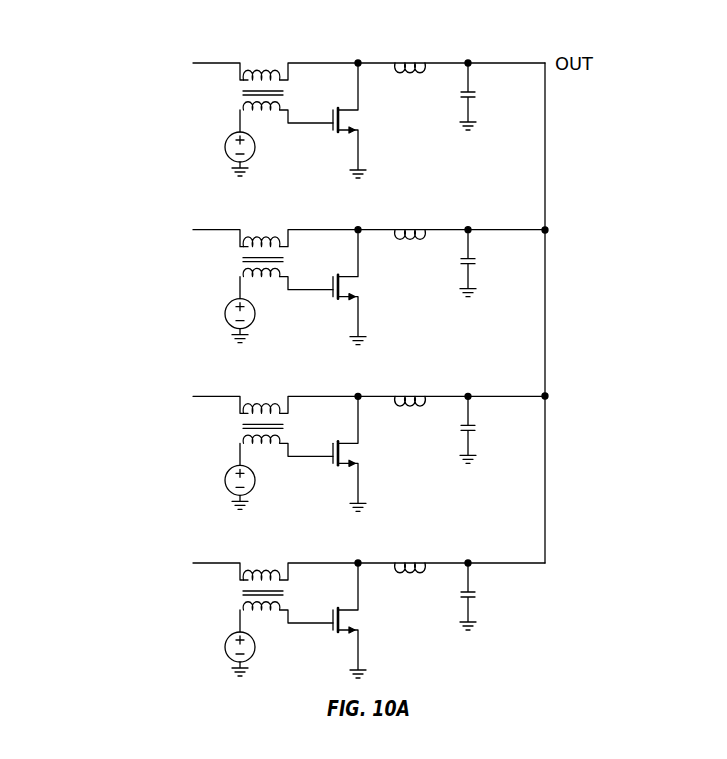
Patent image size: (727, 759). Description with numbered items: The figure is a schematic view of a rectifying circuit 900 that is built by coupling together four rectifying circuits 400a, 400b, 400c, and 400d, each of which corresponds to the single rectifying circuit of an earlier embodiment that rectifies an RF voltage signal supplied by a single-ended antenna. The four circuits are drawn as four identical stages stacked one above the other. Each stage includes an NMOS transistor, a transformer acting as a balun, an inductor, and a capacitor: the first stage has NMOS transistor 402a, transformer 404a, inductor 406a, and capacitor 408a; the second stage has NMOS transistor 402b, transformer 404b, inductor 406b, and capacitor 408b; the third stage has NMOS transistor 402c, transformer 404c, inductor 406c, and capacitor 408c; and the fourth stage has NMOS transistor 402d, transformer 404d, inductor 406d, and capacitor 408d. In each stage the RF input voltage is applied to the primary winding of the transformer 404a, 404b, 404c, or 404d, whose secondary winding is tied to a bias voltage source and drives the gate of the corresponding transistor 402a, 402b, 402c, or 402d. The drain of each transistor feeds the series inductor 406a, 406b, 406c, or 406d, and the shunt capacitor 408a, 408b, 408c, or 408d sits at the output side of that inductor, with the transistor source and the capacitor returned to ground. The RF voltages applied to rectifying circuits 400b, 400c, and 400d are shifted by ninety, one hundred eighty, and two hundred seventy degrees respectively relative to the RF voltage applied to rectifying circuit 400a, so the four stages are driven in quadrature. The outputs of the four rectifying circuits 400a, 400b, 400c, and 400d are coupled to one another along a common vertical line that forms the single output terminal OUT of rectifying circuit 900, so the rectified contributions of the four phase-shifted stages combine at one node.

The rectifying circuit 900 is at (92, 72).
The rectifying circuit 400a is at (404, 108).
The rectifying circuit 400b is at (403, 275).
The rectifying circuit 400c is at (398, 441).
The rectifying circuit 400d is at (398, 608).
The NMOS transistor 402a is at (355, 130).
The NMOS transistor 402b is at (373, 286).
The NMOS transistor 402c is at (373, 452).
The NMOS transistor 402d is at (373, 619).
The transformer (balun) 404a is at (267, 72).
The transformer (balun) 404b is at (245, 241).
The transformer (balun) 404c is at (245, 407).
The transformer (balun) 404d is at (245, 574).
The inductor 406a is at (409, 61).
The inductor 406b is at (437, 223).
The inductor 406c is at (437, 389).
The inductor 406d is at (437, 556).
The capacitor 408a is at (461, 92).
The capacitor 408b is at (434, 262).
The capacitor 408c is at (434, 428).
The capacitor 408d is at (434, 595).